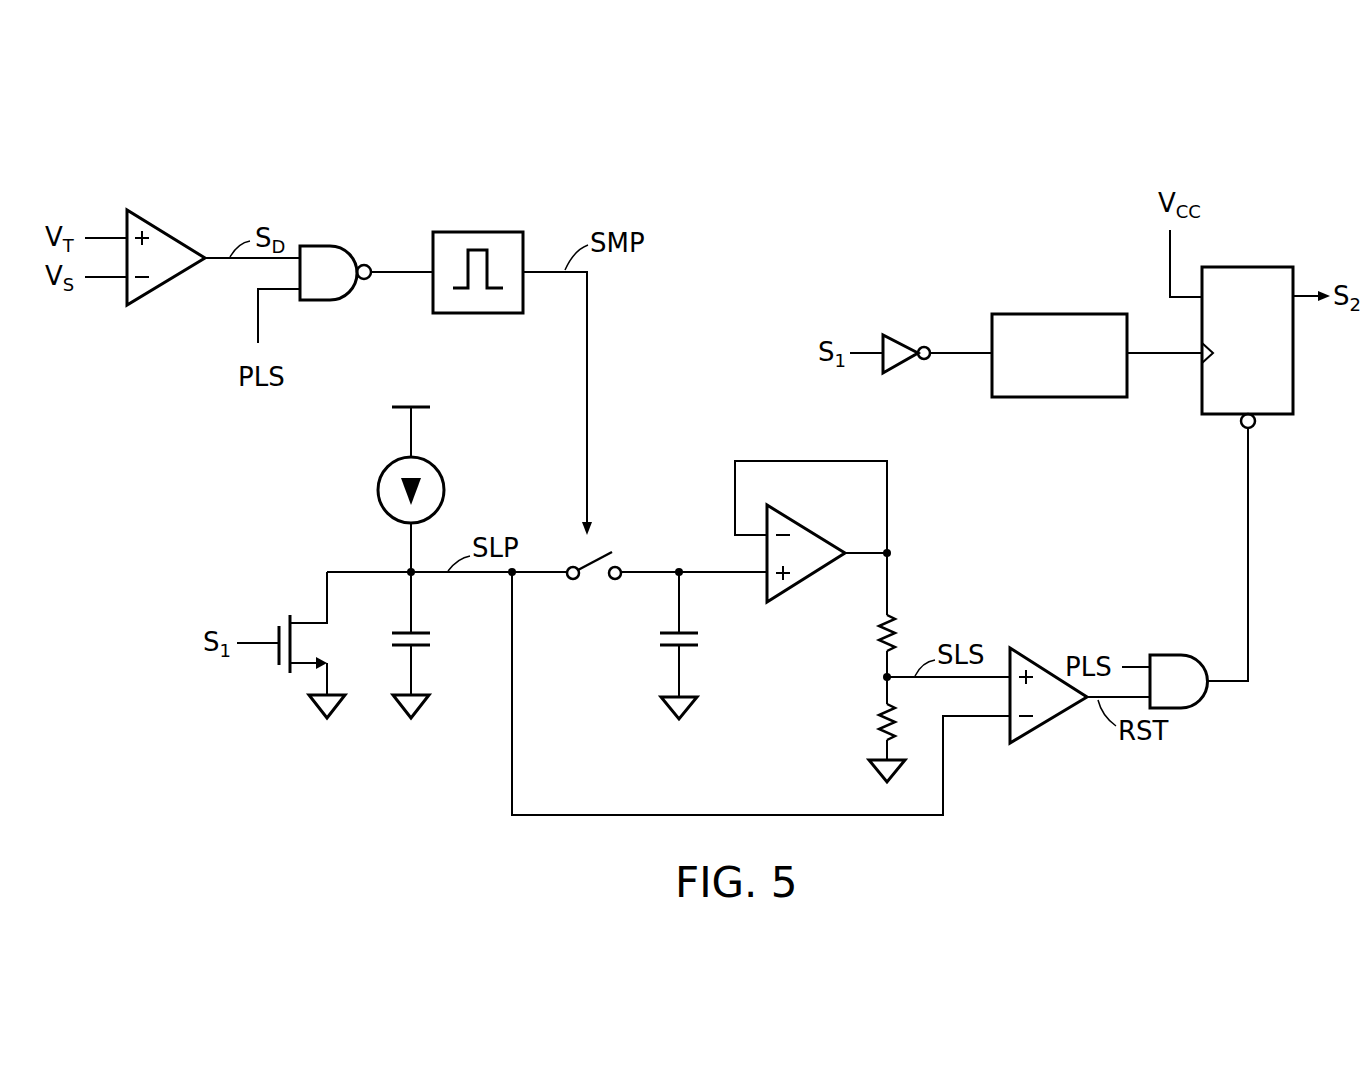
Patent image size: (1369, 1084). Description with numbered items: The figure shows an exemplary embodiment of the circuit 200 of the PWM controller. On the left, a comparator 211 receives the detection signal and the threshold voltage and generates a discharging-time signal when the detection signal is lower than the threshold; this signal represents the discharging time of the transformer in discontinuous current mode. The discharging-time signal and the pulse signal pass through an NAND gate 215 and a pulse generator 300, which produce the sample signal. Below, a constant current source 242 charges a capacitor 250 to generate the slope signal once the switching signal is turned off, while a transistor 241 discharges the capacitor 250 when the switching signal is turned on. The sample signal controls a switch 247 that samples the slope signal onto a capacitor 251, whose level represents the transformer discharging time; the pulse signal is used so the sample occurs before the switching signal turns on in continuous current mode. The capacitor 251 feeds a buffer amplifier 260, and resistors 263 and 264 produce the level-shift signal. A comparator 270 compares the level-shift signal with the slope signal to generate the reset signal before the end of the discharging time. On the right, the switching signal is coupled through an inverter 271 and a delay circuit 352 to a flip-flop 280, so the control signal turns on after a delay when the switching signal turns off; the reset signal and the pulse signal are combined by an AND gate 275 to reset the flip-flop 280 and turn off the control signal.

The circuit 200 is at (1287, 129).
The comparator 211 is at (168, 226).
The NAND gate 215 is at (332, 245).
The pulse generator 300 is at (503, 232).
The constant current source 242 is at (378, 490).
The transistor 241 is at (302, 608).
The capacitor 250 is at (419, 626).
The switch 247 is at (598, 586).
The capacitor 251 is at (688, 631).
The buffer amplifier 260 is at (808, 530).
The resistor 263 is at (872, 634).
The resistor 264 is at (872, 720).
The comparator 270 is at (1040, 728).
The AND gate 275 is at (1165, 655).
The inverter 271 is at (905, 335).
The delay circuit 352 is at (1062, 314).
The flip-flop 280 is at (1250, 267).